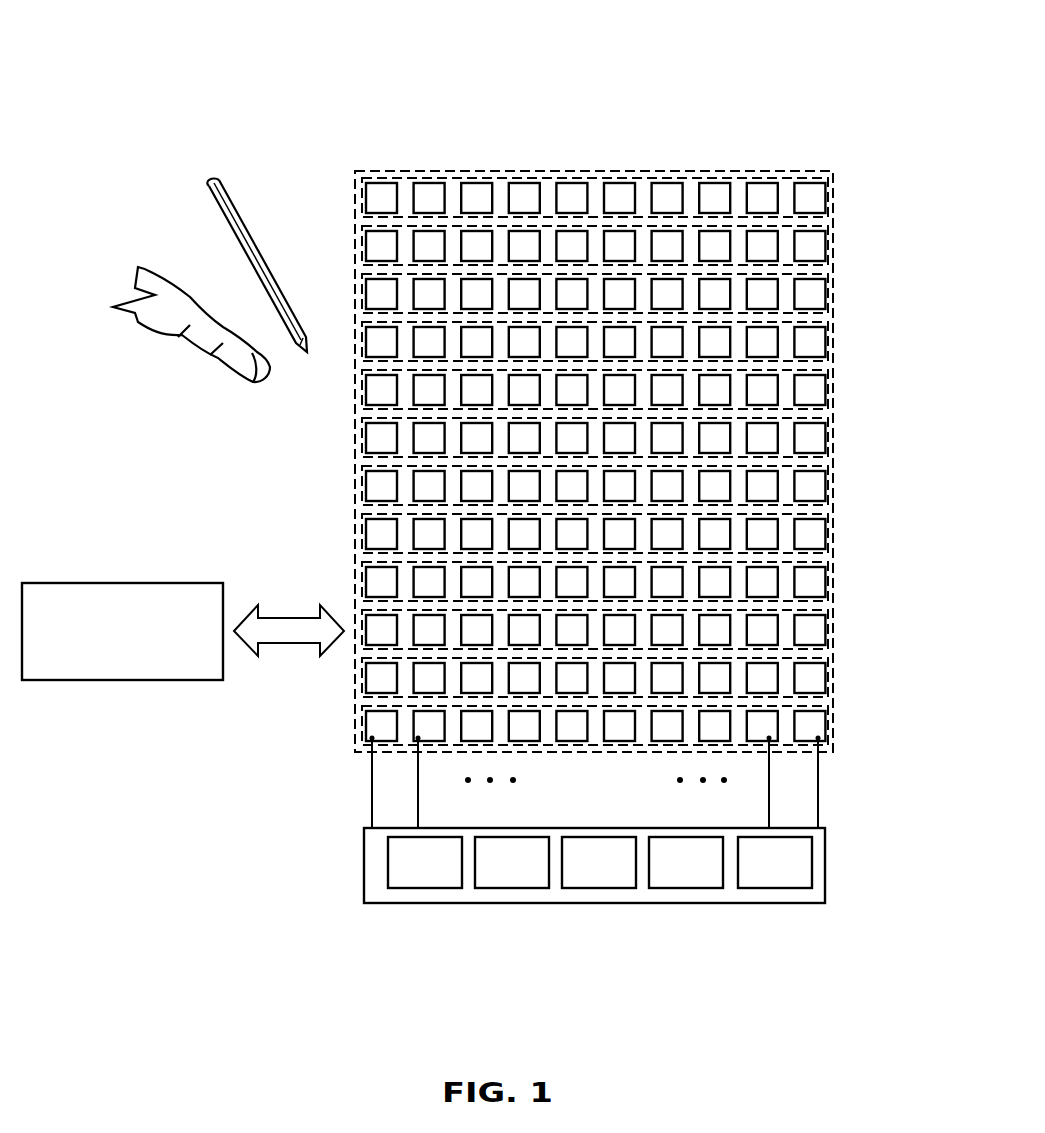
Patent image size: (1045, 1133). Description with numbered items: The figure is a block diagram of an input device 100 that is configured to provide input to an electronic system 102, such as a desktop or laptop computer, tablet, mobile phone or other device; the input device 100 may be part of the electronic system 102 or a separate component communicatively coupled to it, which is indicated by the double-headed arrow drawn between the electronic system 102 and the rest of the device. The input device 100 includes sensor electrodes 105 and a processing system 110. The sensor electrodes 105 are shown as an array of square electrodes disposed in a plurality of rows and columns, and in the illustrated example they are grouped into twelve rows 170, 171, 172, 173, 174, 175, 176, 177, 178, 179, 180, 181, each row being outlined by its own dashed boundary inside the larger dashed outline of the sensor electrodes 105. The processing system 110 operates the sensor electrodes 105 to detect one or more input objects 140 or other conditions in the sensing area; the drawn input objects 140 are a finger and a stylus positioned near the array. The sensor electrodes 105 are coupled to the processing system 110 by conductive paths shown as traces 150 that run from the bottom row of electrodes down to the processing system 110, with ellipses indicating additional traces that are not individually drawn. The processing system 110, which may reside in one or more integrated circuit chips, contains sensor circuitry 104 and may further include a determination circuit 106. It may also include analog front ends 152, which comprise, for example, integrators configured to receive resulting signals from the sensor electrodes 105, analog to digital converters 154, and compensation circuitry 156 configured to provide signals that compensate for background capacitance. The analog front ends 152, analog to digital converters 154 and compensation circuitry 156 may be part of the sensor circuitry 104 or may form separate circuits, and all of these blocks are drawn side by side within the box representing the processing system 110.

The input device 100 is at (122, 38).
The electronic system 102 is at (122, 631).
The sensor circuitry 104 is at (425, 862).
The sensor electrodes 105 is at (492, 170).
The determination circuit 106 is at (775, 862).
The processing system 110 is at (825, 863).
The input objects 140 is at (172, 283).
The traces 150 is at (818, 782).
The analog front ends 152 is at (512, 862).
The analog to digital converters 154 is at (599, 862).
The compensation circuitry 156 is at (686, 862).
The row 170 is at (823, 198).
The row 171 is at (823, 246).
The row 172 is at (823, 294).
The row 173 is at (823, 342).
The row 174 is at (823, 390).
The row 175 is at (823, 438).
The row 176 is at (823, 486).
The row 177 is at (823, 534).
The row 178 is at (823, 582).
The row 179 is at (823, 630).
The row 180 is at (823, 678).
The row 181 is at (823, 726).